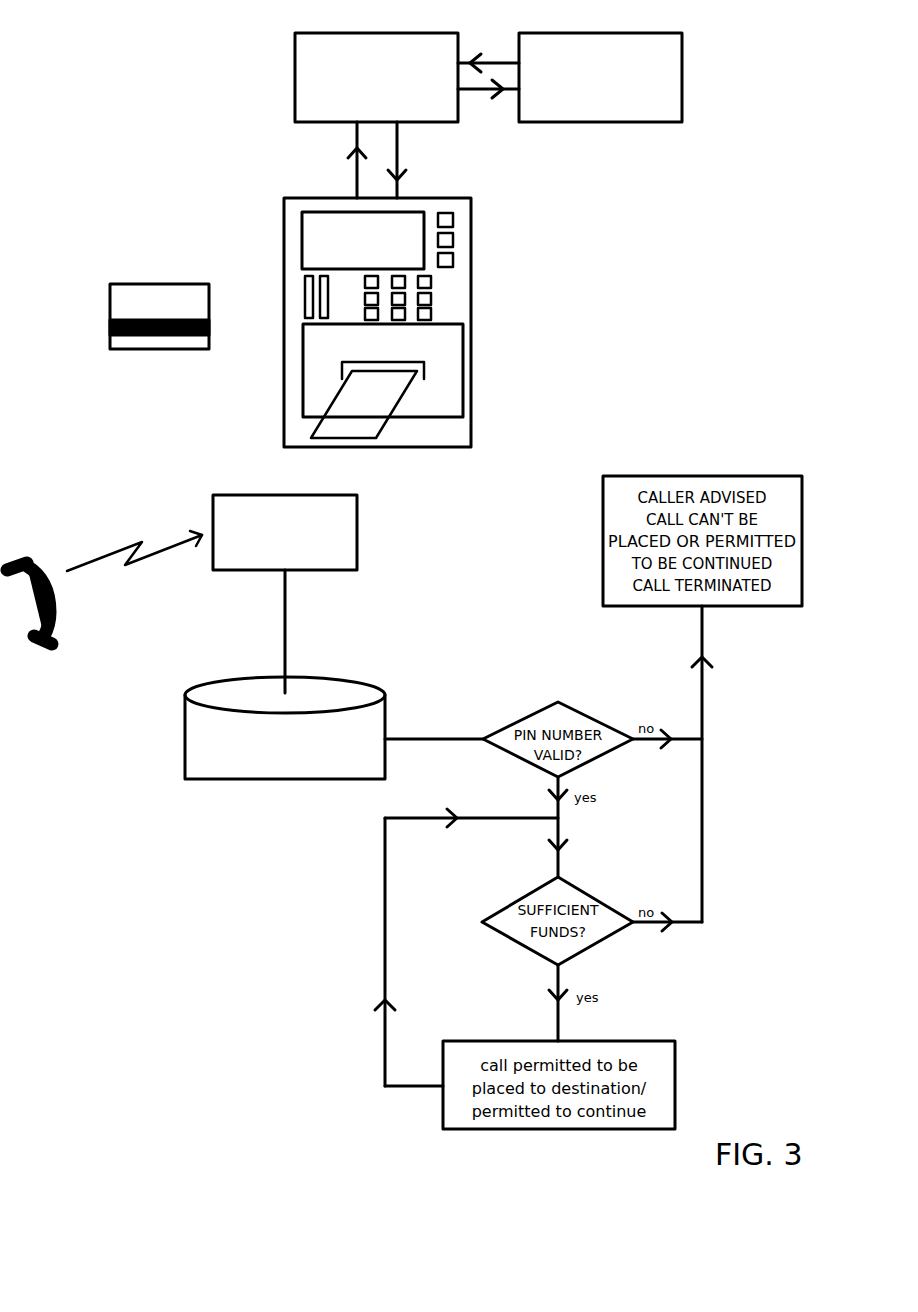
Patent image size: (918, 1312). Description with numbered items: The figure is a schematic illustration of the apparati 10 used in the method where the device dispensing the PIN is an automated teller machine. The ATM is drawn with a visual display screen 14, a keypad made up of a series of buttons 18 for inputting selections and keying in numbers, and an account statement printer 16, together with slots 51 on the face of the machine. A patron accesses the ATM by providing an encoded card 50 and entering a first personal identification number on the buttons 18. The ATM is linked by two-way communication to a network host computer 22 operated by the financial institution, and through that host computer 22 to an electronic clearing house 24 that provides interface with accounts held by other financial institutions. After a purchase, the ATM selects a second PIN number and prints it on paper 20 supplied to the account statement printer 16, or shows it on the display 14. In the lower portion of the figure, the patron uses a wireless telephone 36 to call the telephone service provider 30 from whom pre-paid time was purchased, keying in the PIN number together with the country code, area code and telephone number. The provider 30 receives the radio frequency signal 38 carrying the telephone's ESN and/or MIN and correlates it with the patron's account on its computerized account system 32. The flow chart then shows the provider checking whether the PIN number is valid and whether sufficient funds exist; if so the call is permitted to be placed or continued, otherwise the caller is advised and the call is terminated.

The apparati 10 is at (319, 243).
The network host computer 22 is at (376, 77).
The electronic clearing house 24 is at (600, 77).
The visual display screen 14 is at (325, 227).
The buttons 18 is at (433, 295).
The card slots 51 is at (302, 297).
The account statement printer 16 is at (323, 378).
The paper 20 is at (364, 404).
The encoded card 50 is at (173, 302).
The wireless telephone 36 is at (36, 553).
The radio frequency signal 38 is at (168, 545).
The telephone service provider 30 is at (285, 594).
The computerized account system 32 is at (285, 728).